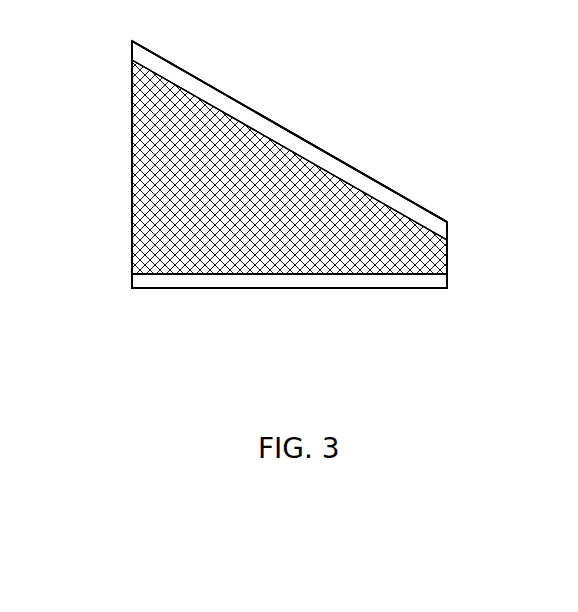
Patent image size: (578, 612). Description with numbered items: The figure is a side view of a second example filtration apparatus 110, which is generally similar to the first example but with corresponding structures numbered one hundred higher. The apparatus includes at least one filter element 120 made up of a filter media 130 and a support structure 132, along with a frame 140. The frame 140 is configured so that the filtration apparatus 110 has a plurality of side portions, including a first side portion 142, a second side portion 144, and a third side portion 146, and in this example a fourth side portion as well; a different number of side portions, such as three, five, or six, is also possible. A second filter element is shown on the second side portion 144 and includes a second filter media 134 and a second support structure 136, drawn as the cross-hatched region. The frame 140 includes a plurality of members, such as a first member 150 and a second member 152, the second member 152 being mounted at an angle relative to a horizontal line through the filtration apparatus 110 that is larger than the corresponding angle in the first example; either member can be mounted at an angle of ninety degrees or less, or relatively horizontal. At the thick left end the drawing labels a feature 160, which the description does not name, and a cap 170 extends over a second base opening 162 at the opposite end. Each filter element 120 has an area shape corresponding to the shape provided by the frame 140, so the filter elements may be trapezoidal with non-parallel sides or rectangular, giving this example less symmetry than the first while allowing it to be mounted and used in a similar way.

The second example filtration apparatus 110 is at (317, 164).
The filter element 120 is at (289, 323).
The filter media 130 is at (289, 330).
The support structure 132 is at (289, 323).
The second filter media 134 is at (216, 260).
The second support structure 136 is at (289, 164).
The frame 140 is at (303, 326).
The first side portion 142 is at (289, 334).
The second side portion 144 is at (370, 205).
The third side portion 146 is at (289, 130).
The first member 150 is at (277, 288).
The second member 152 is at (313, 146).
The thick end 160 is at (131, 234).
The second base opening 162 is at (497, 279).
The cap 170 is at (488, 215).